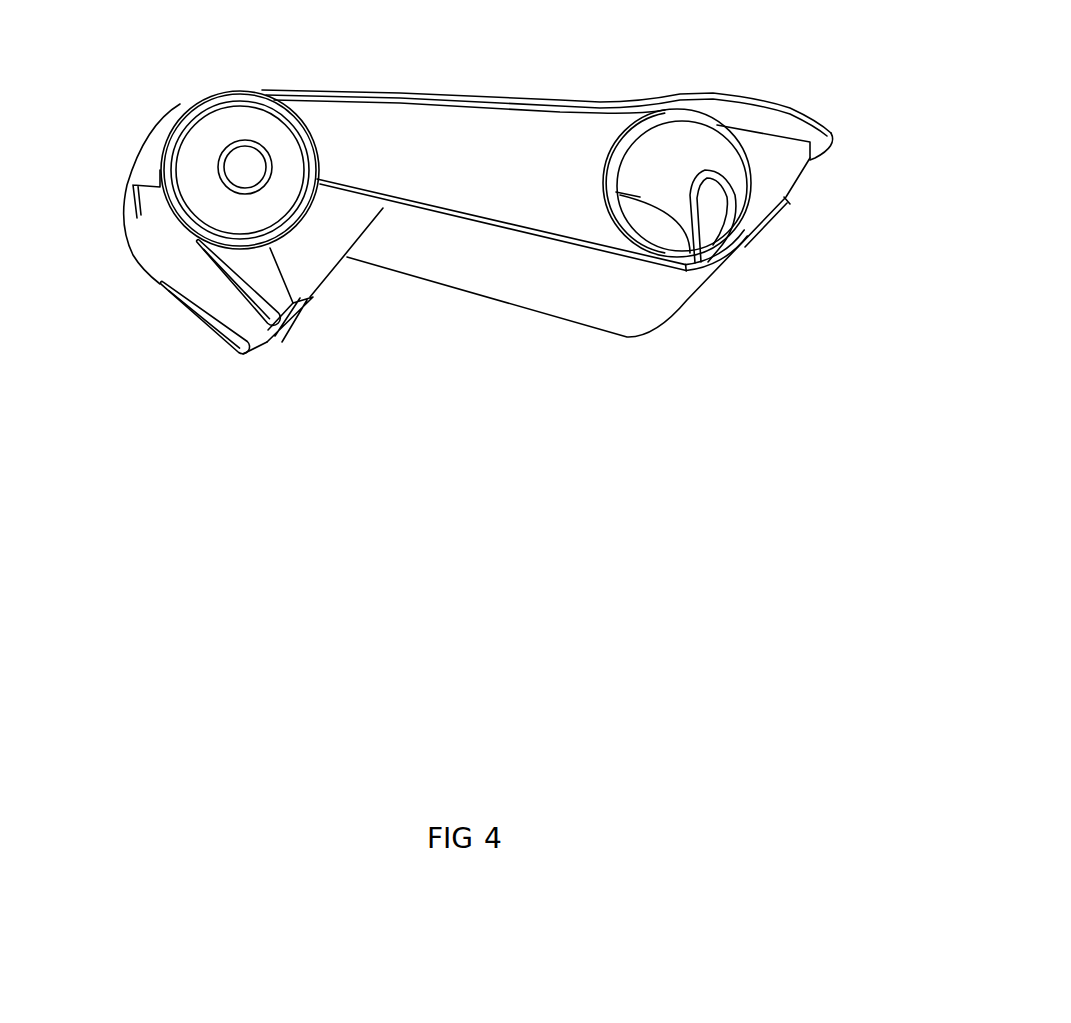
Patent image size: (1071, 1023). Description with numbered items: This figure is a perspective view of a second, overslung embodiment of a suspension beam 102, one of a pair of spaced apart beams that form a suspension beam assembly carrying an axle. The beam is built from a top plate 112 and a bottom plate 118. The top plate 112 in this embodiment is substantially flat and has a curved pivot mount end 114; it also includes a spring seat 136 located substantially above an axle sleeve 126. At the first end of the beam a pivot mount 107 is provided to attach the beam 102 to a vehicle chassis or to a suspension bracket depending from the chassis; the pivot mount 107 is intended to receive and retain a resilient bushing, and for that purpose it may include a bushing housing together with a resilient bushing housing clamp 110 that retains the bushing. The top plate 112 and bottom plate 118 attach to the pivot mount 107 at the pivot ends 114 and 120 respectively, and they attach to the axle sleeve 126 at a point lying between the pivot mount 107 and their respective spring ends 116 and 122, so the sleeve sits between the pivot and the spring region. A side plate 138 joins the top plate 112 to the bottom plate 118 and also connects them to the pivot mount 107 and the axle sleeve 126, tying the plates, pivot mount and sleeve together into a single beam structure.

The suspension beam 102 is at (500, 357).
The pivot mount 107 is at (222, 183).
The resilient bushing housing clamp 110 is at (233, 350).
The top plate 112 is at (572, 99).
The curved pivot mount end 114 is at (173, 115).
The spring end 116 is at (833, 148).
The bottom plate 118 is at (479, 273).
The pivot end 120 is at (318, 177).
The spring end 122 is at (755, 240).
The axle sleeve 126 is at (760, 177).
The spring seat 136 is at (780, 97).
The side plate 138 is at (445, 145).